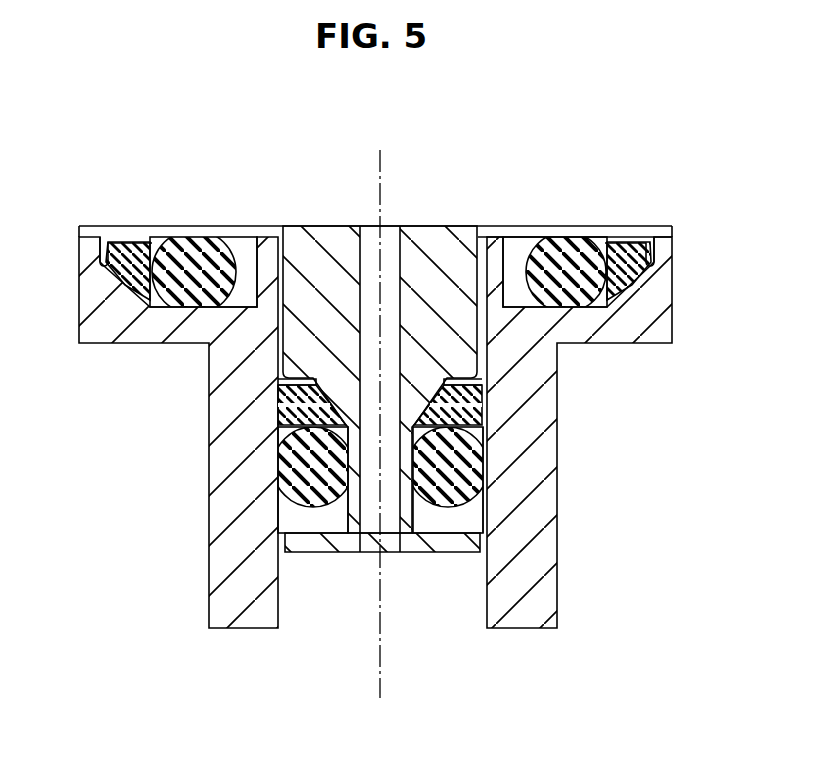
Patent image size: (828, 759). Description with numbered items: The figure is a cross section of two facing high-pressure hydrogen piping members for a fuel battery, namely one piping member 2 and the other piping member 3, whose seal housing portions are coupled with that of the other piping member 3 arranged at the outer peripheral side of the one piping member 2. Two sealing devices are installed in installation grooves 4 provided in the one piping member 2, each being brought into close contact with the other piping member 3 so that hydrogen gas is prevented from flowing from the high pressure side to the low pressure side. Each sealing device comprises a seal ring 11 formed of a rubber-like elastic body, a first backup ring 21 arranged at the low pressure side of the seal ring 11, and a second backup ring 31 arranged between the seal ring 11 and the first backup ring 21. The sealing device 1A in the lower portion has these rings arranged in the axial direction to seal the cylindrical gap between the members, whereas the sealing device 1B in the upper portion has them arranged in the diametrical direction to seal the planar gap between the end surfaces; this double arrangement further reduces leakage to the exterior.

The sealing device 1A is at (487, 447).
The sealing device 1B is at (593, 236).
The one piping member 2 is at (435, 245).
The other piping member 3 is at (517, 598).
The installation groove 4 is at (242, 253).
The seal ring 11 is at (192, 250).
The first backup ring 21 is at (111, 247).
The second backup ring 31 is at (135, 247).